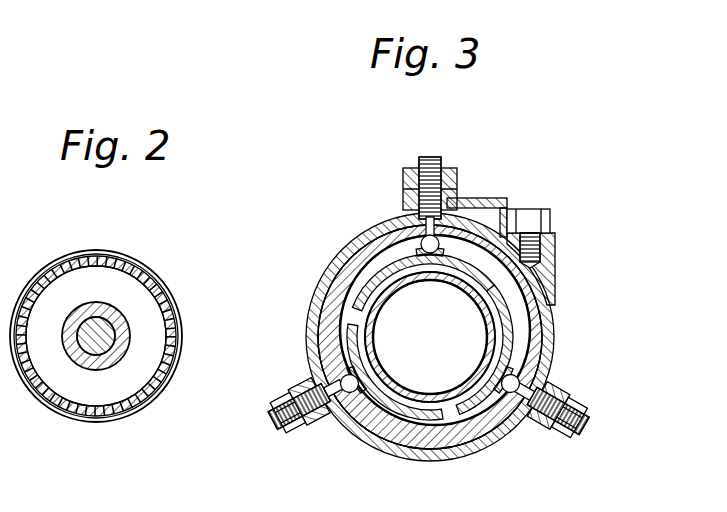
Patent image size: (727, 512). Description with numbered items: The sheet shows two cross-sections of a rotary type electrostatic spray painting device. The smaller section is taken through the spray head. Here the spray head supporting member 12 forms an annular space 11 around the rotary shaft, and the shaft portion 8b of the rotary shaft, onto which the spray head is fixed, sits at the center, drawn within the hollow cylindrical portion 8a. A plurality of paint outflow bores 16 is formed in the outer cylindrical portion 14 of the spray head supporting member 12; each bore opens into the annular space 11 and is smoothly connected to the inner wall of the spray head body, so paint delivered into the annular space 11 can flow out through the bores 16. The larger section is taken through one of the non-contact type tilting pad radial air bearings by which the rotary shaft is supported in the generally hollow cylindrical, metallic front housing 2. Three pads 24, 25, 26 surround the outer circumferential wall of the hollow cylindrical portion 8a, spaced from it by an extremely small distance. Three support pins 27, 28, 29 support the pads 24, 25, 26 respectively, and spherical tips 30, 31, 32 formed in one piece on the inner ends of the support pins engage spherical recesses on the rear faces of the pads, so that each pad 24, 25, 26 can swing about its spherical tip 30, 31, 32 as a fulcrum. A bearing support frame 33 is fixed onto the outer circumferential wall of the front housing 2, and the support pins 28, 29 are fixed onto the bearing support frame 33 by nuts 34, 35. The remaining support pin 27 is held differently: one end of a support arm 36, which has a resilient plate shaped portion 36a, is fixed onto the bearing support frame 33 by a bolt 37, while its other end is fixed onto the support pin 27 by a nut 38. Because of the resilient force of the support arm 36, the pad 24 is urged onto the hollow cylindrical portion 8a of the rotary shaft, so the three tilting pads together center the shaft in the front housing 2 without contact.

In FIG. 3, the front housing 2 is at (347, 268).
In FIG. 3, the hollow cylindrical portion 8a is at (411, 384).
In FIG. 2, the shaft portion 8b is at (102, 318).
In FIG. 2, the annular space 11 is at (145, 330).
In FIG. 2, the spray head supporting member 12 is at (118, 357).
In FIG. 2, the outer cylindrical portion 14 is at (162, 282).
In FIG. 2, the paint outflow bores 16 is at (80, 258).
In FIG. 3, the pad 24 is at (330, 307).
In FIG. 3, the pad 25 is at (505, 312).
In FIG. 3, the pad 26 is at (400, 410).
In FIG. 3, the support pin 27 is at (441, 168).
In FIG. 3, the support pin 28 is at (585, 408).
In FIG. 3, the support pin 29 is at (328, 437).
In FIG. 3, the spherical tip 30 is at (422, 238).
In FIG. 3, the spherical tip 31 is at (520, 368).
In FIG. 3, the spherical tip 32 is at (338, 376).
In FIG. 3, the bearing support frame 33 is at (368, 232).
In FIG. 3, the nut 34 is at (547, 441).
In FIG. 3, the nut 35 is at (303, 442).
In FIG. 3, the support arm 36 is at (510, 209).
In FIG. 3, the resilient plate shaped portion 36a is at (488, 207).
In FIG. 3, the bolt 37 is at (550, 212).
In FIG. 3, the nut 38 is at (452, 178).